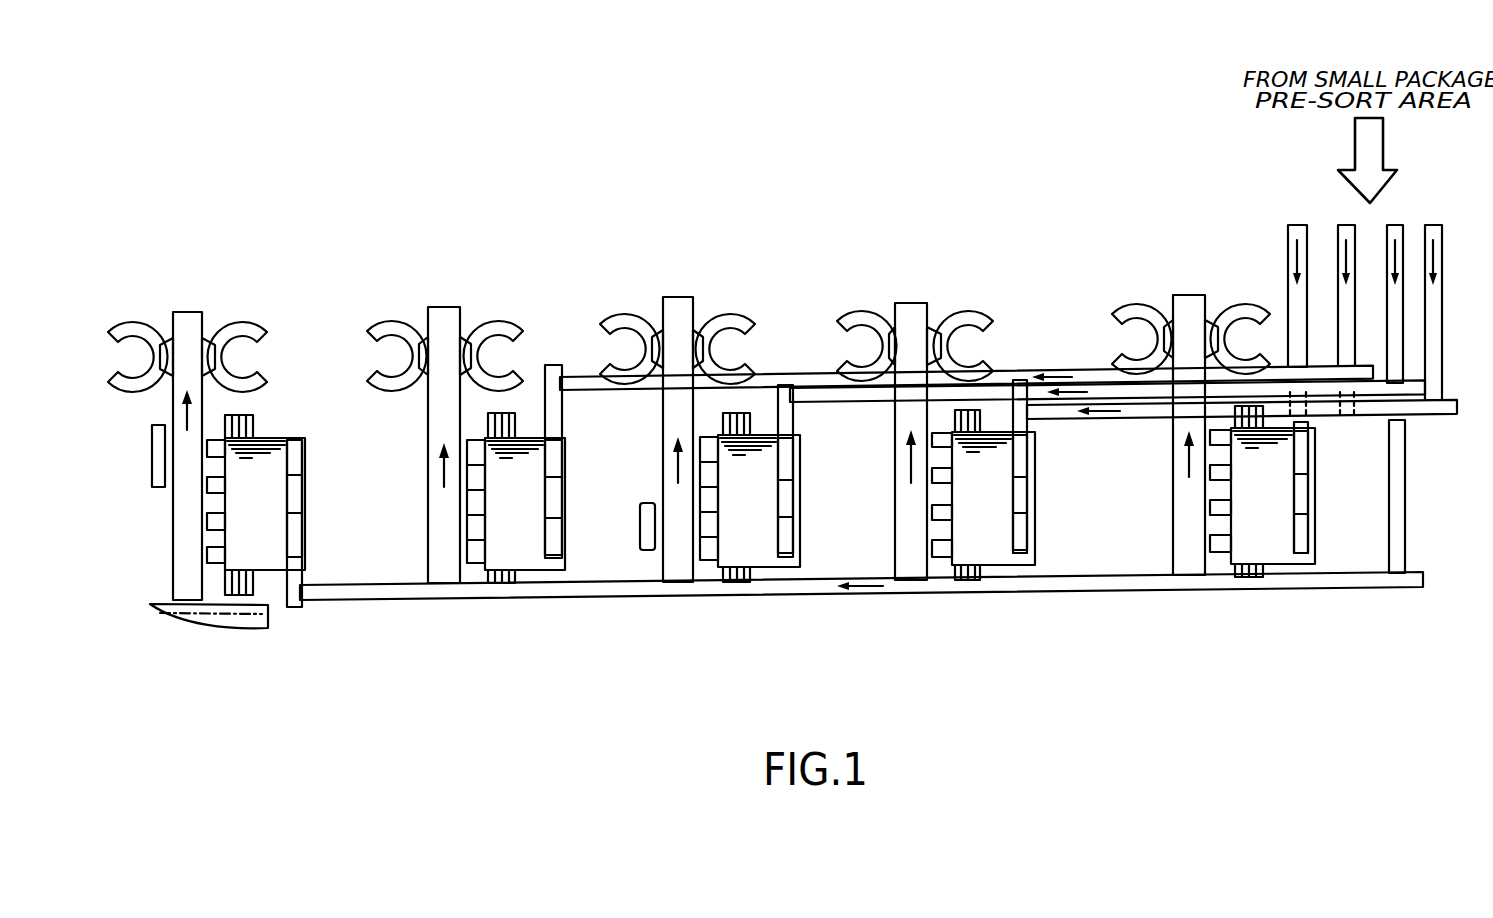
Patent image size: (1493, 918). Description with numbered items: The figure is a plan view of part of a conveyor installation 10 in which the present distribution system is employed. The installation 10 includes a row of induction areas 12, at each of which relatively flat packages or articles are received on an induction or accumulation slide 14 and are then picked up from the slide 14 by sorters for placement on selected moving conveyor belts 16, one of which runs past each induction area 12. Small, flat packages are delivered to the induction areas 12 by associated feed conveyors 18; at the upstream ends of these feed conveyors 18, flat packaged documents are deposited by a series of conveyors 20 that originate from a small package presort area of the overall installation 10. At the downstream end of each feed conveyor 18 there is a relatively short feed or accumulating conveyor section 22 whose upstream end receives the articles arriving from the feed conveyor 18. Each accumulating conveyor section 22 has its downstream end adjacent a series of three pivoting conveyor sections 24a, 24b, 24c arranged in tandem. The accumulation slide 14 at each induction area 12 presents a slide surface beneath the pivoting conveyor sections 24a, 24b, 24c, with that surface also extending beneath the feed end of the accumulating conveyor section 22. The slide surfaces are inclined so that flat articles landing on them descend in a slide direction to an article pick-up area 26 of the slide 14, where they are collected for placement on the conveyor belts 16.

The conveyor installation 10 is at (978, 272).
The induction area 12 is at (298, 378).
The induction or accumulation slide 14 is at (268, 522).
The moving conveyor belt 16 is at (190, 320).
The feed conveyor 18 is at (585, 388).
The conveyor from presort area 20 is at (1347, 228).
The feed or accumulating conveyor section 22 is at (832, 496).
The pivoting conveyor section 24a is at (297, 540).
The pivoting conveyor section 24b is at (296, 500).
The pivoting conveyor section 24c is at (296, 462).
The article pick-up area 26 is at (238, 553).